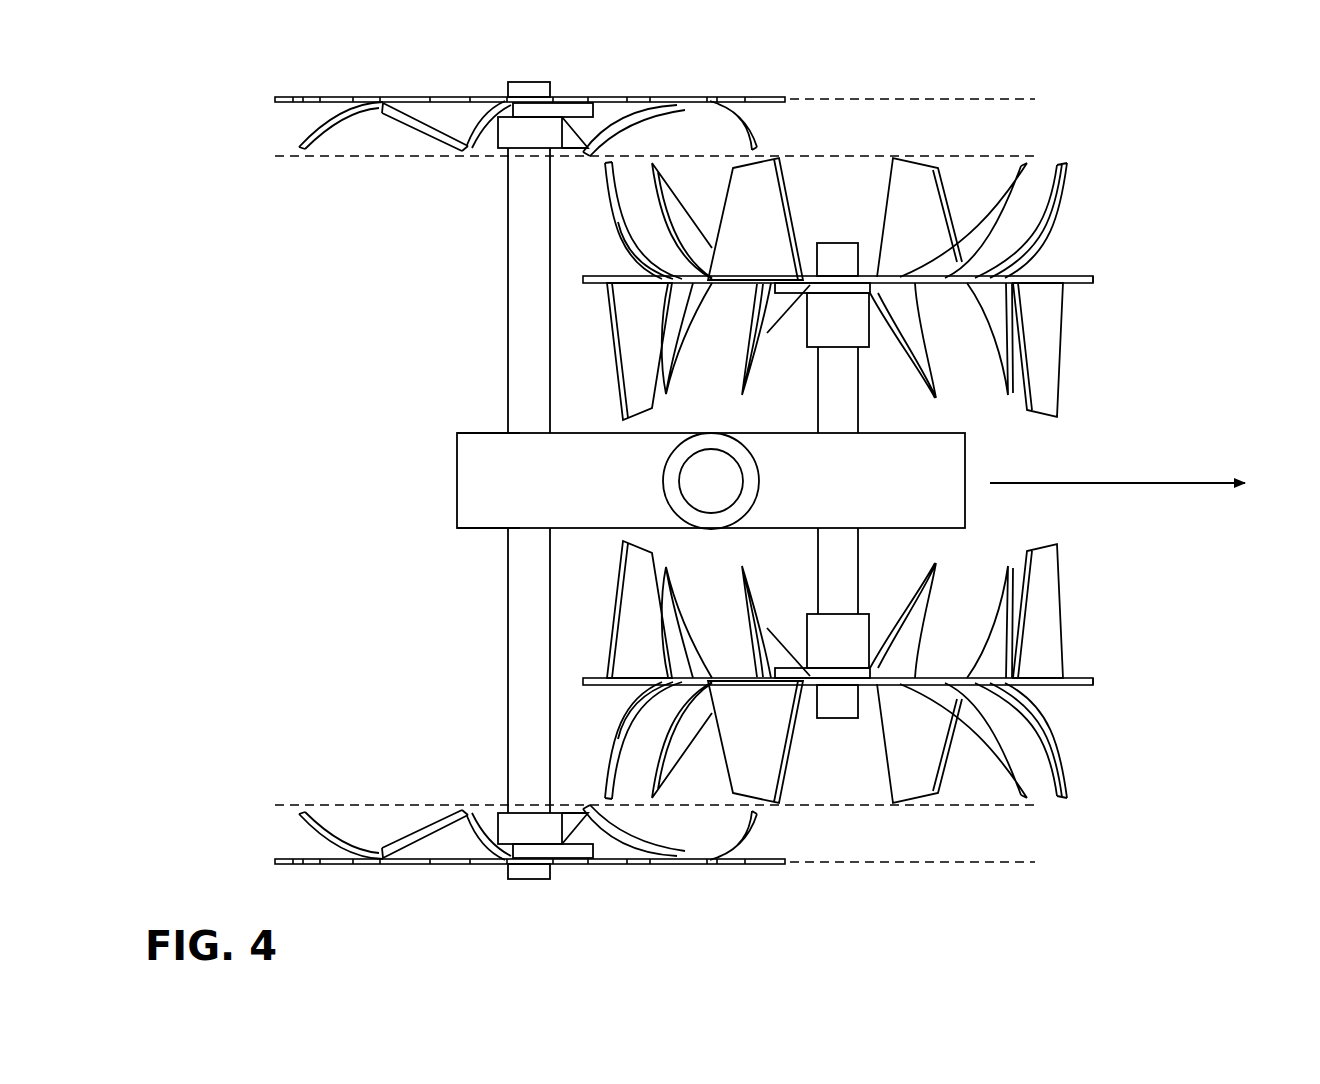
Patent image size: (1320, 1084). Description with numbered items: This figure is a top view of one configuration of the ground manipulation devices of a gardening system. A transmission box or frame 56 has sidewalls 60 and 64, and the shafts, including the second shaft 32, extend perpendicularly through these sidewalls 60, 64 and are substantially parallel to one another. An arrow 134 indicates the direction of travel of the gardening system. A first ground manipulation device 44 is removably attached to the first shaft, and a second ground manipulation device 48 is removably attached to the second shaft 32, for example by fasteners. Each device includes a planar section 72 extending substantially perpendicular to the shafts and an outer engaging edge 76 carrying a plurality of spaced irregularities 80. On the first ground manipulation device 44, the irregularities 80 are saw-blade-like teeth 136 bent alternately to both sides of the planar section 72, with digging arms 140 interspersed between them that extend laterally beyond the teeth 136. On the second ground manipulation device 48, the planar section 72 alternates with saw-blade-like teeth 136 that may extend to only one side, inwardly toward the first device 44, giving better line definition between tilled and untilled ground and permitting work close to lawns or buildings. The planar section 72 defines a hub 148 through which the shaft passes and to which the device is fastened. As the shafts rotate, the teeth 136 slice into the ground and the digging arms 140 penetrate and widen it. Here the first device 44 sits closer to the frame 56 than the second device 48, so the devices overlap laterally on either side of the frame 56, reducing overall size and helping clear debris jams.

The second shaft 32 is at (530, 627).
The first ground manipulation device 44 is at (1105, 312).
The second ground manipulation device 48 is at (278, 168).
The frame 56 is at (556, 496).
The sidewall 60 is at (465, 432).
The sidewall 64 is at (465, 529).
The planar section 72 is at (1100, 280).
The outer engaging edge 76 is at (413, 228).
The irregularities 80 is at (1027, 410).
The arrow 134 is at (1147, 483).
The saw-blade-like teeth 136 is at (770, 337).
The digging arms 140 is at (738, 253).
The hub 148 is at (840, 313).